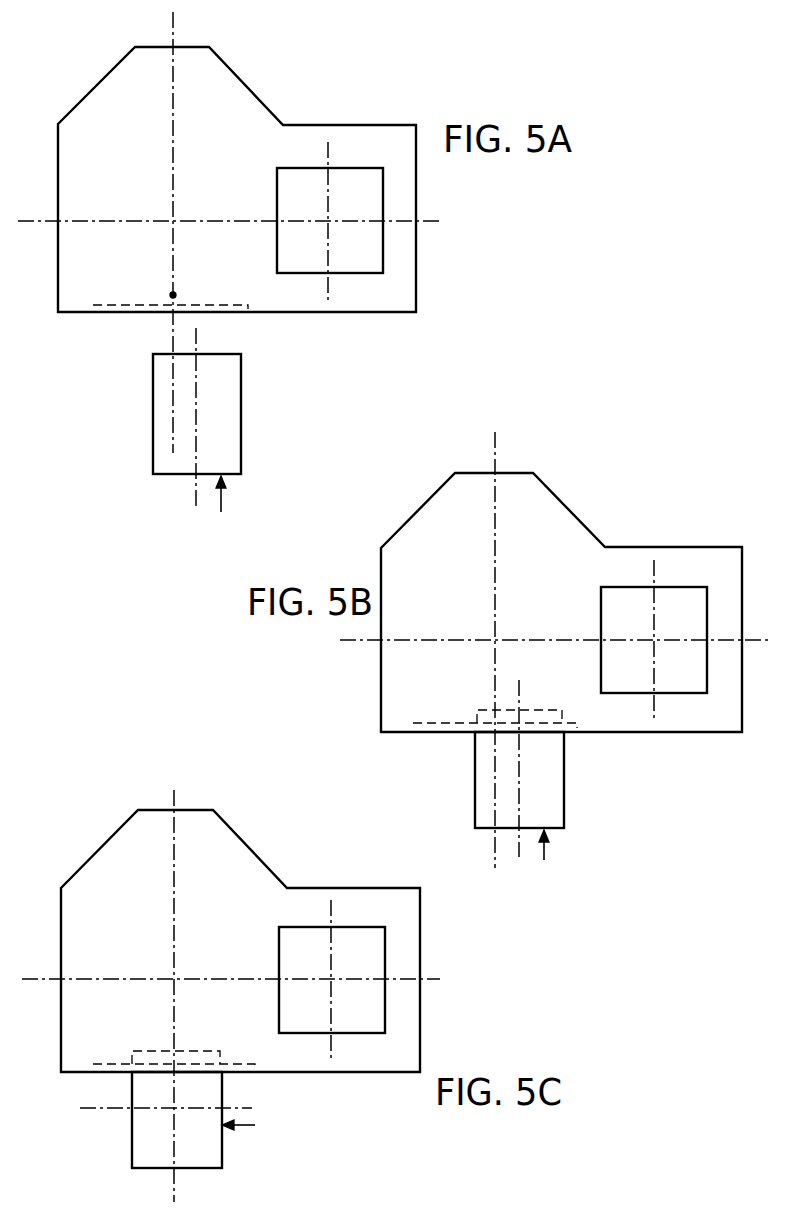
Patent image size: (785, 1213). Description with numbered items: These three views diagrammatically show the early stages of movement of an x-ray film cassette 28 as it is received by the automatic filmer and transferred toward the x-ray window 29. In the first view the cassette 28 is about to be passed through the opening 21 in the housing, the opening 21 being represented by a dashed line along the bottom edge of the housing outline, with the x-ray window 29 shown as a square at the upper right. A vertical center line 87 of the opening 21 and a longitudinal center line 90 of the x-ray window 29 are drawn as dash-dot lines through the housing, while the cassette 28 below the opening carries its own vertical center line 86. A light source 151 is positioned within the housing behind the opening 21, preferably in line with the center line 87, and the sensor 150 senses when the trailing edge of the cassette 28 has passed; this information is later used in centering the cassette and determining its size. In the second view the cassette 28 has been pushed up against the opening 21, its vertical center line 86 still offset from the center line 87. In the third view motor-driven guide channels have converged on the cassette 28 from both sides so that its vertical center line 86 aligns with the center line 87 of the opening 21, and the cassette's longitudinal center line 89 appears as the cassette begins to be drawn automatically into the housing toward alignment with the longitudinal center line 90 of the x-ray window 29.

In FIG. 5A, the opening 21 is at (130, 315).
In FIG. 5B, the opening 21 is at (437, 725).
In FIG. 5C, the opening 21 is at (247, 1075).
In FIG. 5A, the x-ray film cassette 28 is at (243, 415).
In FIG. 5B, the x-ray film cassette 28 is at (566, 785).
In FIG. 5A, the x-ray window 29 is at (281, 197).
In FIG. 5B, the x-ray window 29 is at (603, 593).
In FIG. 5C, the x-ray window 29 is at (279, 937).
In FIG. 5A, the vertical center line of the cassette 86 is at (198, 347).
In FIG. 5B, the vertical center line of the cassette 86 is at (520, 700).
In FIG. 5C, the vertical center line of the cassette 86 is at (177, 1183).
In FIG. 5A, the center line of opening 87 is at (177, 29).
In FIG. 5B, the center line of opening 87 is at (498, 455).
In FIG. 5C, the center line of opening 87 is at (177, 790).
In FIG. 5C, the longitudinal center line of the cassette 89 is at (112, 1109).
In FIG. 5A, the longitudinal center line of the x-ray window 90 is at (135, 220).
In FIG. 5B, the longitudinal center line of the x-ray window 90 is at (451, 615).
In FIG. 5C, the longitudinal center line of the x-ray window 90 is at (116, 978).
In FIG. 5A, the sensor 150 is at (169, 293).
In FIG. 5A, the light source 151 is at (178, 293).